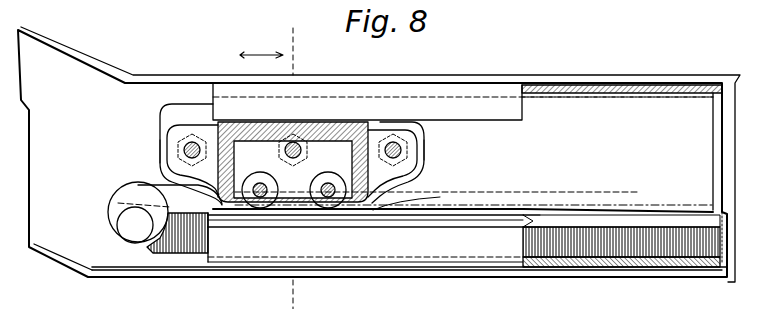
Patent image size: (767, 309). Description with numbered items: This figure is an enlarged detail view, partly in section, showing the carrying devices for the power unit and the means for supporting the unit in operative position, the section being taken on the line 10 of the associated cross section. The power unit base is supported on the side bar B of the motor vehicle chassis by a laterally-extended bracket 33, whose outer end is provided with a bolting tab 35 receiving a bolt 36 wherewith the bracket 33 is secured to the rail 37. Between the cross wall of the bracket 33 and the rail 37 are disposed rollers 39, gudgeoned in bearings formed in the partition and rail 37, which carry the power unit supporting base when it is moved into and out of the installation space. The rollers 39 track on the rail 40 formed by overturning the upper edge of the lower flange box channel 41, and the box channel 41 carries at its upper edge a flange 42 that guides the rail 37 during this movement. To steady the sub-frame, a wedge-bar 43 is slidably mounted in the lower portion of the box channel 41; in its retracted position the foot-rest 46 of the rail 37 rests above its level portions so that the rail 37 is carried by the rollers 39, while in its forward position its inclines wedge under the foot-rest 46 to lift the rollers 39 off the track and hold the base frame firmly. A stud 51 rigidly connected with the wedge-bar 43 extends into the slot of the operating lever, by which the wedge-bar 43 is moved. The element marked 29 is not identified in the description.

The side bar B is at (100, 72).
The section line 10 is at (272, 159).
The roller 29 is at (330, 180).
The bracket 33 is at (217, 128).
The bolting tab 35 is at (172, 167).
The bolt 36 is at (188, 148).
The rail 37 is at (622, 108).
The roller 39 is at (263, 182).
The rail 40 is at (533, 220).
The box channel 41 is at (572, 87).
The flange 42 is at (503, 112).
The wedge-bar 43 is at (645, 235).
The foot-rest 46 is at (380, 207).
The stud 51 is at (127, 228).